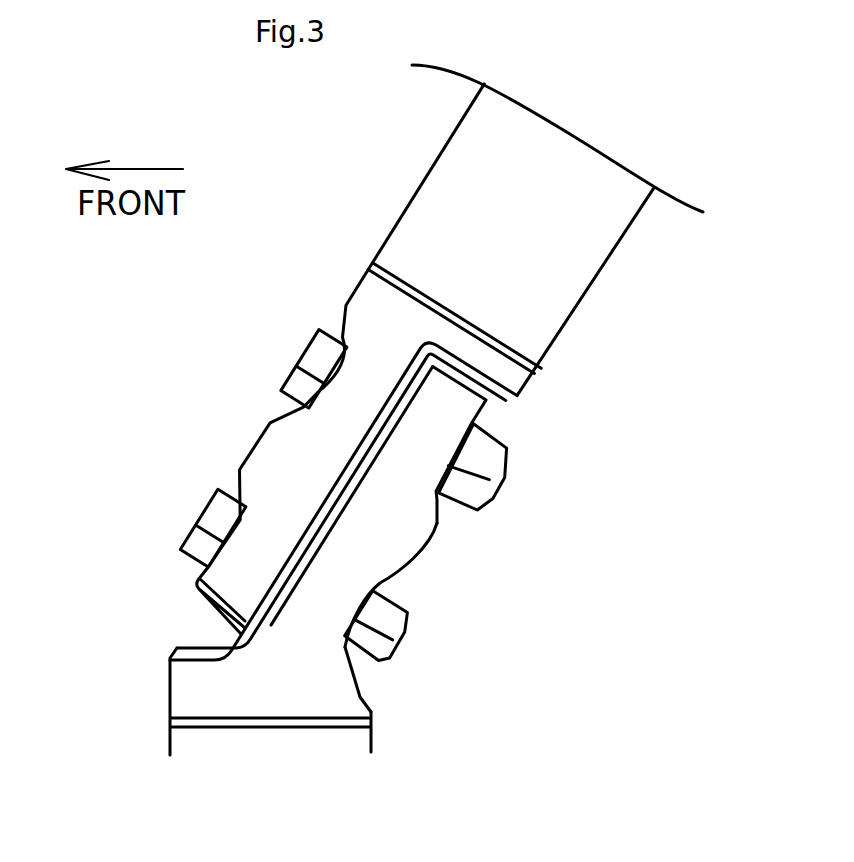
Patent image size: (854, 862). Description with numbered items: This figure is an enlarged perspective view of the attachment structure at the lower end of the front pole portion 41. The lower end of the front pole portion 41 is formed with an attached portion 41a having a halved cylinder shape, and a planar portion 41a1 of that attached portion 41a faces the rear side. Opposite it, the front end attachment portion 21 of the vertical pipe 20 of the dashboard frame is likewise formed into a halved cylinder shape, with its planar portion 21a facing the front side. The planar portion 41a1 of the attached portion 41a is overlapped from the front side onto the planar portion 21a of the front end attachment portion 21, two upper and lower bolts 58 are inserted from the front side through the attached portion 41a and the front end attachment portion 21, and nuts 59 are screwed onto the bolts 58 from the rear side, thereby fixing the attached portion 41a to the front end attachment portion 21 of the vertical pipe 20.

The front pole portion 41 is at (553, 285).
The attached portion 41a is at (280, 442).
The planar portion 41a1 is at (345, 512).
The bolts 58 is at (328, 365).
The nuts 59 is at (464, 458).
The front end attachment portion 21 is at (360, 565).
The planar portion 21a is at (348, 514).
The vertical pipe 20 is at (308, 747).